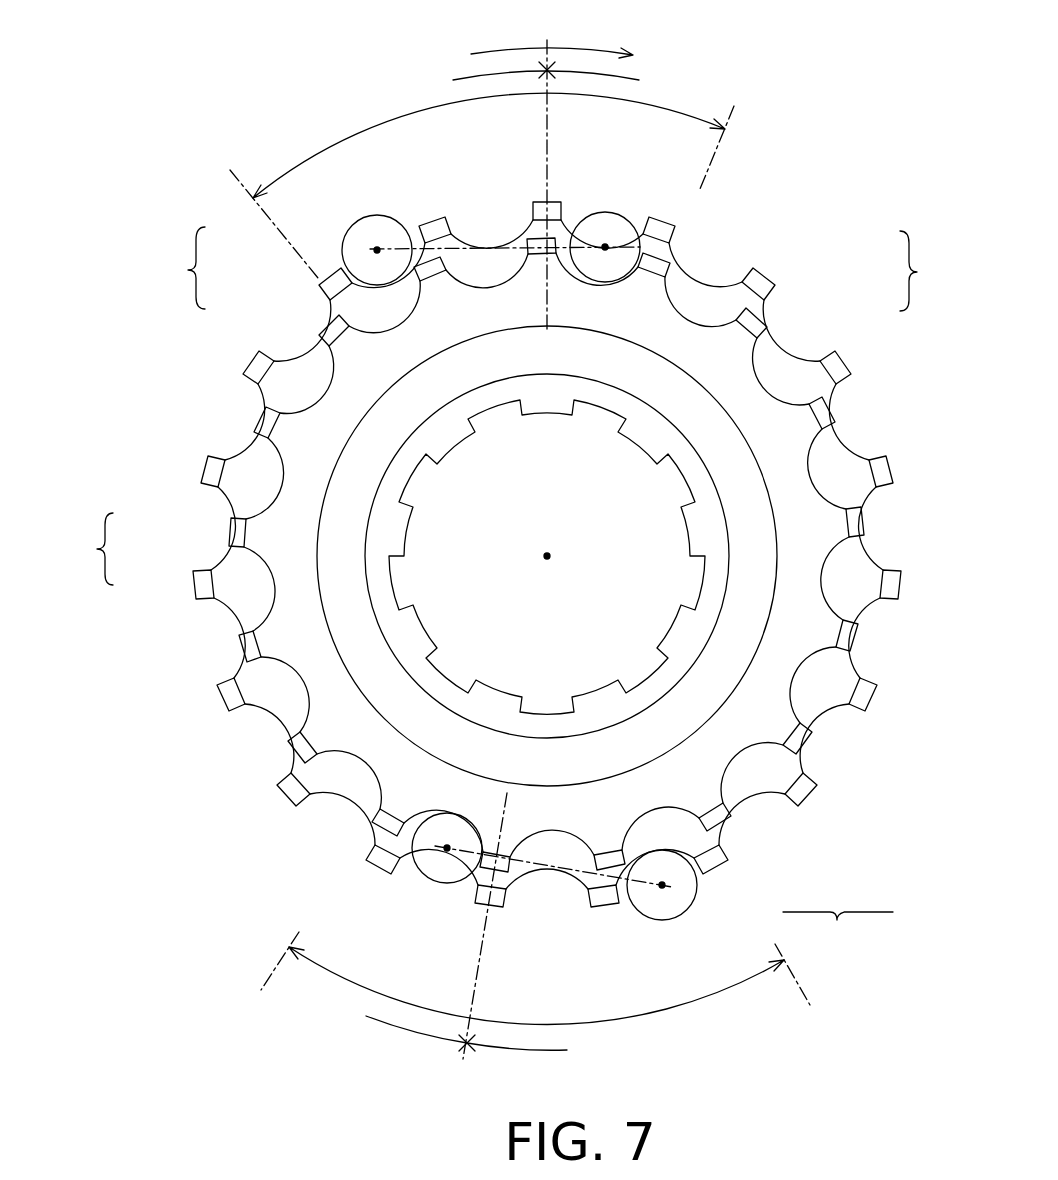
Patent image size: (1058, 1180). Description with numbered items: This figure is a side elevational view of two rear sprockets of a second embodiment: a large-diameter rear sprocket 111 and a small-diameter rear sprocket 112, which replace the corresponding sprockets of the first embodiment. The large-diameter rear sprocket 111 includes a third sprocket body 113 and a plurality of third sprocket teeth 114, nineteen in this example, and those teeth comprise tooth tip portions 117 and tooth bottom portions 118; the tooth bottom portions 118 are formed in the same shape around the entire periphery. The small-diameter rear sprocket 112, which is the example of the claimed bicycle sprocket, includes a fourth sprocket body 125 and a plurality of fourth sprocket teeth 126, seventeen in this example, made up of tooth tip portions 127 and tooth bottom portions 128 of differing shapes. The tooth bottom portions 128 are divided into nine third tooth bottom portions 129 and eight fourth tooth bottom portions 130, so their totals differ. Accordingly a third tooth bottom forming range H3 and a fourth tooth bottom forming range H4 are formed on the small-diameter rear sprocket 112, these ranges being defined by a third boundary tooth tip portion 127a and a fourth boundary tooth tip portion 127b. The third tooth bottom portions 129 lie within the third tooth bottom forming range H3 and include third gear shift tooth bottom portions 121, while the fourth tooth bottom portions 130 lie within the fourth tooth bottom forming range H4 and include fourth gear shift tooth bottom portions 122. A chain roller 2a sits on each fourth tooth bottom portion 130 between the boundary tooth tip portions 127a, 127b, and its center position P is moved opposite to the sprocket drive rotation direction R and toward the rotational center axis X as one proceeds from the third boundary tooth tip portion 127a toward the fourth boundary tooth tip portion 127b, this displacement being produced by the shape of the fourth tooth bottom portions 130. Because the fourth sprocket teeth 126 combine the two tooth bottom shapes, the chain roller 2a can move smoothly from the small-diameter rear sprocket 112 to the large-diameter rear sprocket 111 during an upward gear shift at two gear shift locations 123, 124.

The chain roller 2a is at (377, 215).
The large-diameter rear sprocket 111 is at (167, 268).
The small-diameter rear sprocket 112 is at (75, 549).
The third sprocket body 113 is at (317, 381).
The third sprocket teeth 114 is at (236, 360).
The tooth tip portions 117 is at (783, 278).
The tooth bottom portions 118 is at (799, 346).
The third gear shift tooth bottom portions 121 is at (618, 168).
The fourth gear shift tooth bottom portions 122 is at (419, 914).
The gear shift location 123 is at (360, 129).
The gear shift location 124 is at (665, 1012).
The fourth sprocket body 125 is at (315, 478).
The fourth sprocket teeth 126 is at (220, 548).
The tooth tip portions 127 is at (820, 750).
The third boundary tooth tip portion 127a is at (540, 240).
The fourth boundary tooth tip portion 127b is at (505, 885).
The tooth bottom portions 128 is at (755, 758).
The third tooth bottom portions 129 is at (808, 468).
The fourth tooth bottom portions 130 is at (355, 790).
The third tooth bottom forming range H3 is at (577, 560).
The fourth tooth bottom forming range H4 is at (435, 550).
The center position P is at (526, 548).
The sprocket drive rotation direction R is at (552, 35).
The rotational center axis X is at (533, 557).